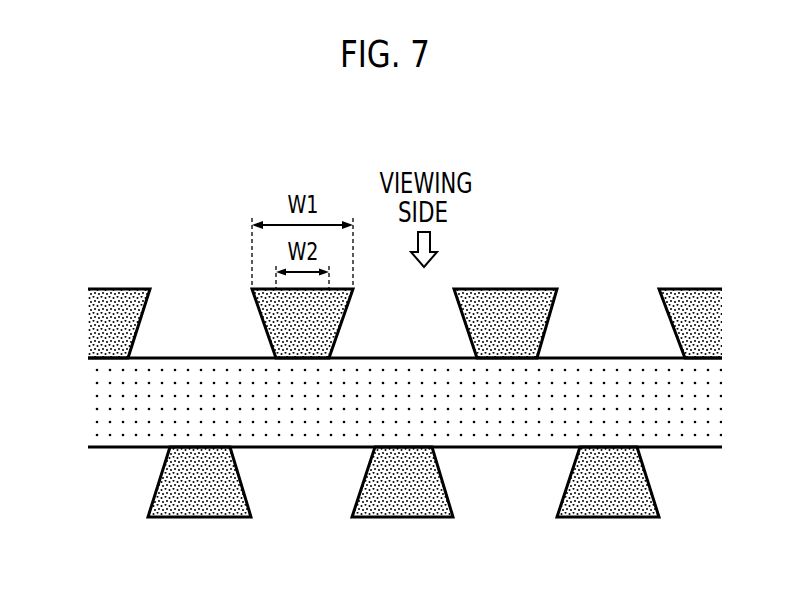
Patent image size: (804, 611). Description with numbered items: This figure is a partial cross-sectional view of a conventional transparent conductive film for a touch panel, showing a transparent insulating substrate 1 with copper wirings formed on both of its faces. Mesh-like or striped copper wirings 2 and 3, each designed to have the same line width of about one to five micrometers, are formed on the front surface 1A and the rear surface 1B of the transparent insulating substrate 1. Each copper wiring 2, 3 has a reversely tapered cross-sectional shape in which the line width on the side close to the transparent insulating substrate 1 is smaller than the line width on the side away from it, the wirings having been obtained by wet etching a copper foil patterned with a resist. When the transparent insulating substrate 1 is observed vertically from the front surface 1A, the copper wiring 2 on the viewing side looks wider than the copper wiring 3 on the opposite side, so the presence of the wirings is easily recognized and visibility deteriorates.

The transparent insulating substrate 1 is at (434, 405).
The front surface 1A is at (590, 358).
The rear surface 1B is at (692, 447).
The copper wiring 2 is at (510, 288).
The copper wiring 3 is at (618, 520).